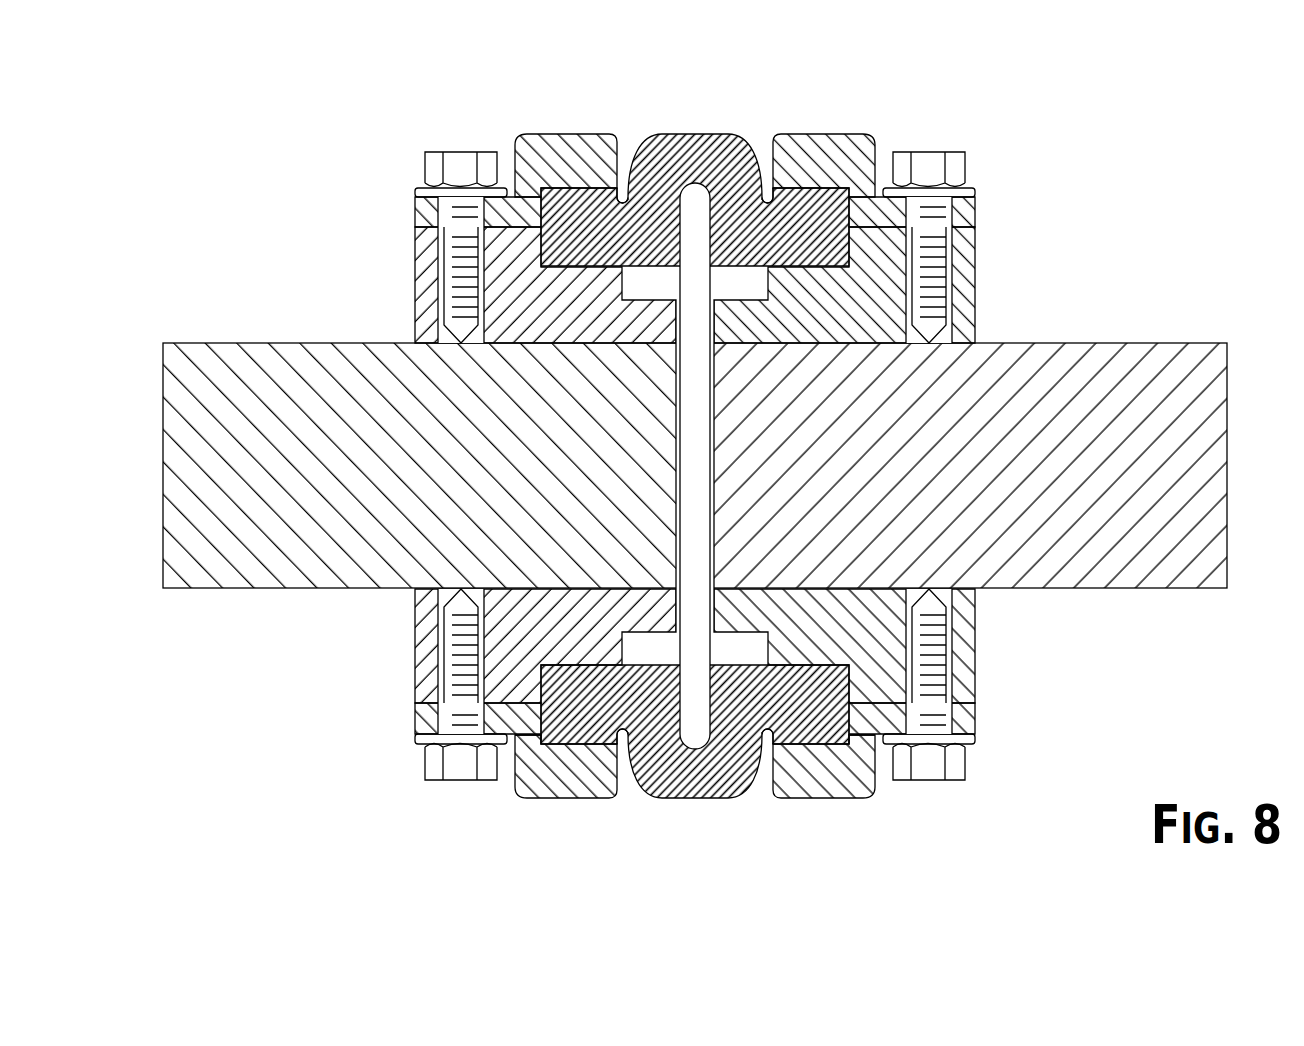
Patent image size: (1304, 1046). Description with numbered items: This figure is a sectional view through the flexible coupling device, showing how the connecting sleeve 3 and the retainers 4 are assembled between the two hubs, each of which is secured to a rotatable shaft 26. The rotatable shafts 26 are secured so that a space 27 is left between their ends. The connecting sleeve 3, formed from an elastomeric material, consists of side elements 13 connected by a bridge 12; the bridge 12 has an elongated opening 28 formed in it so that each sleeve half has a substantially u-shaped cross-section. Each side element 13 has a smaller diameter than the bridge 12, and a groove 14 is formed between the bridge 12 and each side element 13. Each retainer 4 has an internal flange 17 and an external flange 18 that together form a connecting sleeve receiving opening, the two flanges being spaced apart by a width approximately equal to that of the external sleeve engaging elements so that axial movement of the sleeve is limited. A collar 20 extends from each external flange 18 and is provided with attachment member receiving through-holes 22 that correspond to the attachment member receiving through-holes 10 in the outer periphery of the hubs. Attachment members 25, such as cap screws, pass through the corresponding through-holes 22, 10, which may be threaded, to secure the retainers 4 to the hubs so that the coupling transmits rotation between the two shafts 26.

The connecting sleeve 3 is at (695, 780).
The retainer 4 is at (566, 790).
The attachment member receiving through-hole 10 is at (450, 287).
The bridge 12 is at (710, 148).
The side element 13 is at (567, 200).
The groove 14 is at (622, 200).
The internal flange 17 is at (620, 748).
The external flange 18 is at (527, 753).
The collar 20 is at (437, 708).
The attachment member receiving through-hole 22 is at (437, 212).
The attachment member 25 is at (456, 160).
The rotatable shaft 26 is at (237, 358).
The space 27 is at (715, 413).
The elongated opening 28 is at (690, 198).